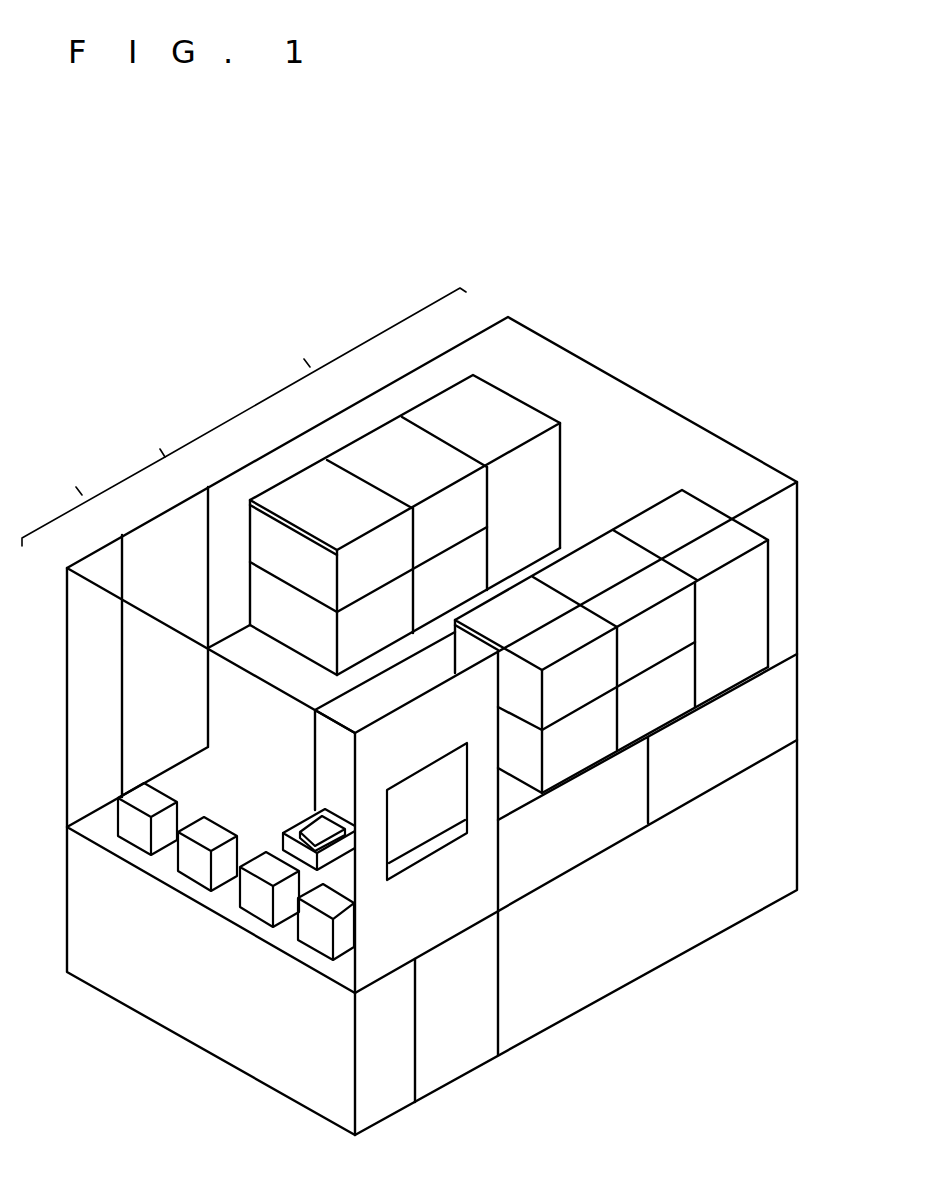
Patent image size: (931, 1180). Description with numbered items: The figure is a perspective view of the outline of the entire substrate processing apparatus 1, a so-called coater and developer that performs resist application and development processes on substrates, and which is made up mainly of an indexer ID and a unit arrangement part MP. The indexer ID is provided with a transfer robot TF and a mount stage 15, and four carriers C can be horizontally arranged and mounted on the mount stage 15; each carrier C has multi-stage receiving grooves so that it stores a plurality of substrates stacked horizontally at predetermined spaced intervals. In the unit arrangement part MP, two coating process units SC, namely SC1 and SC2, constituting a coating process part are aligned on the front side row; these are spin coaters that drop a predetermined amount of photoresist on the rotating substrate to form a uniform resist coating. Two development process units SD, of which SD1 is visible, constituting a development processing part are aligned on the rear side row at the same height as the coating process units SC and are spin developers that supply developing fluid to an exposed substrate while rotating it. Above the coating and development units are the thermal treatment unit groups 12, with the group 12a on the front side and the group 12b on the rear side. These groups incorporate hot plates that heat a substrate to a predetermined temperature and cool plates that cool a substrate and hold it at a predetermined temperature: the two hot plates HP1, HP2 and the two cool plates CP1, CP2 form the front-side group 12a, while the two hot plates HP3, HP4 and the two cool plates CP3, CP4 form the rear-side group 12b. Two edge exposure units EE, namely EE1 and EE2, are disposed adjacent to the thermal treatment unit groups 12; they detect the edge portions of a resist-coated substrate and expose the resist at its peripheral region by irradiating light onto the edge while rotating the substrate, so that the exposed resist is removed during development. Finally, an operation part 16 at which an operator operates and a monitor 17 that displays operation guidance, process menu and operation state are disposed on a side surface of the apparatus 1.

The substrate processing apparatus 1 is at (737, 316).
The thermal treatment unit group 12 is at (509, 536).
The thermal treatment unit group on the front side 12a is at (597, 565).
The thermal treatment unit group on the rear side 12b is at (382, 450).
The edge exposure unit EE is at (668, 433).
The edge exposure unit EE1 is at (785, 585).
The edge exposure unit EE2 is at (505, 387).
The unit arrangement part MP is at (315, 372).
The indexer ID is at (93, 497).
The hot plate HP1 is at (596, 762).
The hot plate HP2 is at (598, 697).
The hot plate HP3 is at (400, 640).
The hot plate HP4 is at (406, 570).
The cool plate CP1 is at (678, 715).
The cool plate CP2 is at (678, 657).
The cool plate CP3 is at (471, 600).
The cool plate CP4 is at (471, 540).
The development process unit SD is at (172, 686).
The development process unit SD1 is at (218, 728).
The transfer robot TF is at (297, 823).
The carrier C is at (200, 863).
The monitor 17 is at (443, 821).
The operation part 16 is at (432, 850).
The mount stage 15 is at (350, 975).
The coating process unit SC is at (633, 877).
The coating process unit SC1 is at (538, 875).
The coating process unit SC2 is at (680, 790).